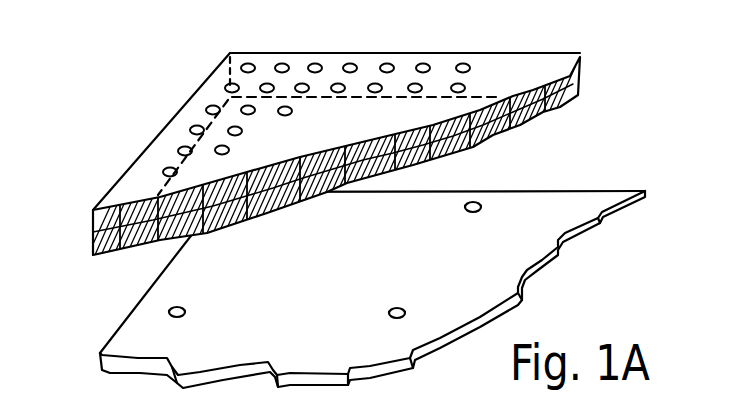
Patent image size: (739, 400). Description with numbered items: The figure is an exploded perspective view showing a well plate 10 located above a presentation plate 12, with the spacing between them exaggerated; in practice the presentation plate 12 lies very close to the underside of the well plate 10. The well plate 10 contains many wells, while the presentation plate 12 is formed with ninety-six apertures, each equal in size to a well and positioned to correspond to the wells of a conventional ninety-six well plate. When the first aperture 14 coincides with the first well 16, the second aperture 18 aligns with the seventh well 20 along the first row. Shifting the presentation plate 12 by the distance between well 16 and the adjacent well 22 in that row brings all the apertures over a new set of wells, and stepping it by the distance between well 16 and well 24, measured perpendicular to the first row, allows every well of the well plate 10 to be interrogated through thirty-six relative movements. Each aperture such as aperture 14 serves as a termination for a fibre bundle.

The well plate 10 is at (387, 133).
The presentation plate 12 is at (346, 289).
The aperture 14 is at (250, 207).
The well 16 is at (230, 62).
The second aperture 18 is at (488, 209).
The seventh well 20 is at (468, 67).
The well 22 is at (312, 25).
The well 24 is at (225, 89).